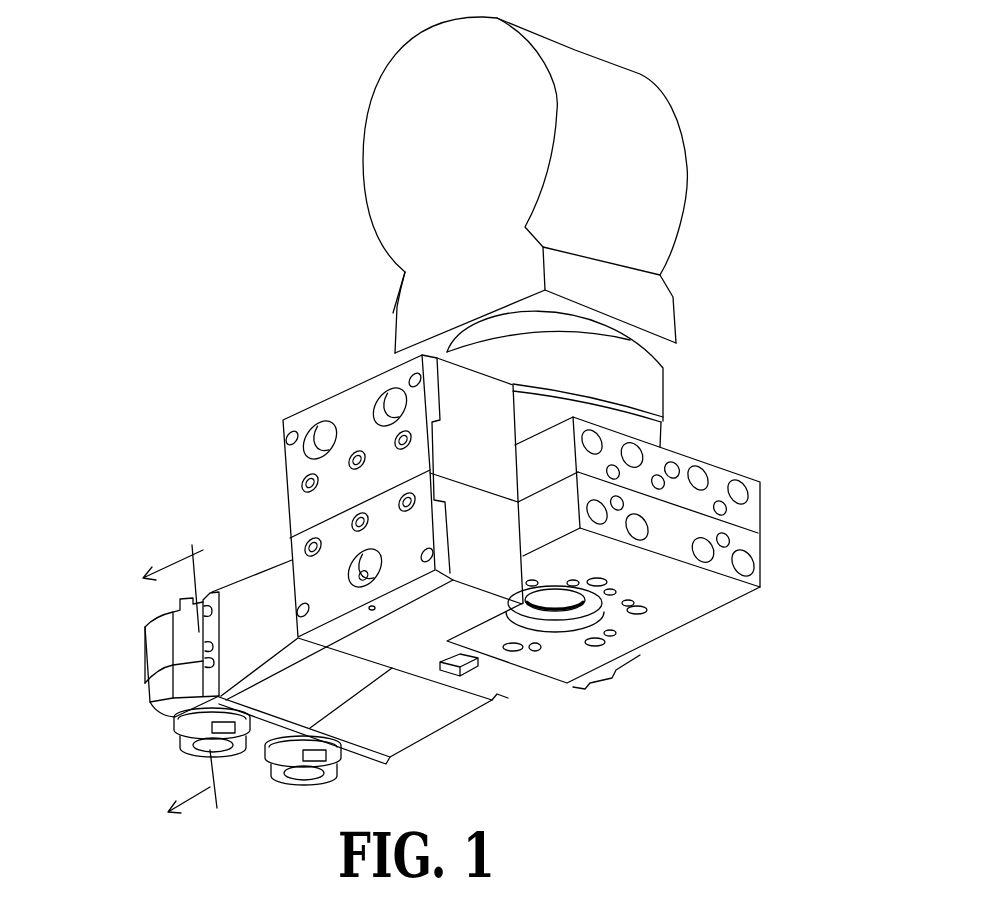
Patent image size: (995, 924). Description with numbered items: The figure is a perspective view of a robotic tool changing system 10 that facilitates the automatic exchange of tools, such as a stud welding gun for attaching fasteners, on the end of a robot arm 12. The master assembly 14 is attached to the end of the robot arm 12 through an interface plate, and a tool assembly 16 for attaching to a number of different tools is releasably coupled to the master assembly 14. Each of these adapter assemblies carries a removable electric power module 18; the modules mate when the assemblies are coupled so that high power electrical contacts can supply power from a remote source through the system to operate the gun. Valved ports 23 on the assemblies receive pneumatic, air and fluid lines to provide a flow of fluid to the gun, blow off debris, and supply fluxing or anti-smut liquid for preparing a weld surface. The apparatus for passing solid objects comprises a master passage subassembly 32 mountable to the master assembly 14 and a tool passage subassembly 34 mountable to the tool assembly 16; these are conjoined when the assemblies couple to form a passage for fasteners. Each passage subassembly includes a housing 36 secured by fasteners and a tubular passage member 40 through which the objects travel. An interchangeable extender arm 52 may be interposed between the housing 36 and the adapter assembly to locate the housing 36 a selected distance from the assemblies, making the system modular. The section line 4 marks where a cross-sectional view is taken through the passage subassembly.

The robotic tool changing system 10 is at (742, 262).
The robot arm 12 is at (655, 110).
The master assembly 14 is at (713, 462).
The tool assembly 16 is at (707, 602).
The electric power module 18 is at (303, 408).
The valved ports 23 is at (745, 497).
The master passage subassembly 32 is at (118, 643).
The tool passage subassembly 34 is at (134, 702).
The housing 36 is at (147, 655).
The tubular passage member 40 is at (180, 753).
The extender arm 52 is at (333, 700).
The section line 4- 4 is at (192, 669).